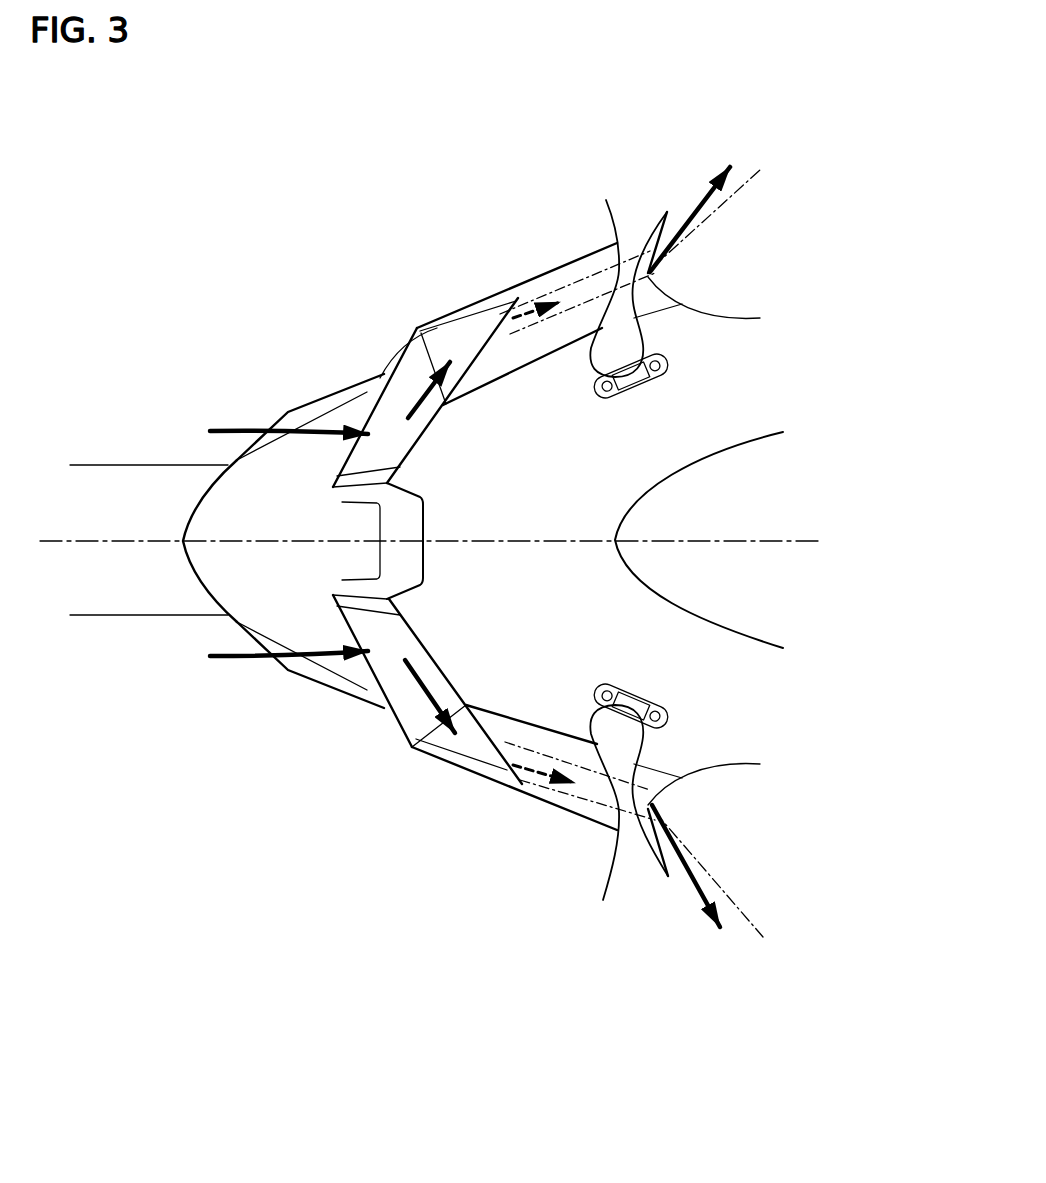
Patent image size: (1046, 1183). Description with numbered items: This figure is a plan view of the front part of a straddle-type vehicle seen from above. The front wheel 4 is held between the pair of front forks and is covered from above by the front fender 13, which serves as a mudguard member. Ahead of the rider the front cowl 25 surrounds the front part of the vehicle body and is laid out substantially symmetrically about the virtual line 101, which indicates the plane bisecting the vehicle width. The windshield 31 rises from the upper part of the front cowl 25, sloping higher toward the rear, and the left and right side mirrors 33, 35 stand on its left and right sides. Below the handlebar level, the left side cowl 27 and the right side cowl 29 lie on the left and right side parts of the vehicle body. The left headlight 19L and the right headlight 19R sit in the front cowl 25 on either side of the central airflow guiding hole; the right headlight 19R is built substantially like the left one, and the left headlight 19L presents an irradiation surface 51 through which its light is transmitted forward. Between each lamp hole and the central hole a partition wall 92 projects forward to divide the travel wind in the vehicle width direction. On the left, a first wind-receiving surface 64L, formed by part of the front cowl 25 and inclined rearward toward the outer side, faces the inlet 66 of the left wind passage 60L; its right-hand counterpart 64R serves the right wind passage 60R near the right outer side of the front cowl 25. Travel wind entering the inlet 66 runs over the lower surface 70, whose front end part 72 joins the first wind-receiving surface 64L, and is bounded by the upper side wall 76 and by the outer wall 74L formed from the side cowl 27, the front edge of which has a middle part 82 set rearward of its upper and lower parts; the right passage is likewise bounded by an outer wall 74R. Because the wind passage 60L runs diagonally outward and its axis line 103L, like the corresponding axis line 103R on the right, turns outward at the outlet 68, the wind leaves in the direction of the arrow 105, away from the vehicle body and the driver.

The front wheel 4 is at (93, 608).
The front fender 13 is at (217, 493).
The right headlight 19R is at (467, 343).
The left headlight 19L is at (473, 731).
The front cowl 25 is at (717, 327).
The side cowl 27 is at (600, 843).
The side cowl 29 is at (606, 203).
The windshield 31 is at (752, 467).
The left side mirror 33 is at (635, 843).
The right side mirror 35 is at (641, 250).
The irradiation surface 51 is at (412, 745).
The right wind passage 60R is at (481, 317).
The wind passage 60L is at (483, 758).
The right winglet 64R is at (375, 422).
The first wind-receiving surface 64L is at (380, 662).
The inlet 66 is at (412, 745).
The outlet 68 is at (660, 807).
The lower surface 70 is at (525, 340).
The front end part 72 is at (445, 693).
The right duct wall 74R is at (597, 277).
The outer wall 74L is at (584, 805).
The upper side wall 76 is at (542, 745).
The middle part 82 is at (509, 780).
The partition wall 92 is at (360, 578).
The virtual line 101 is at (783, 542).
The right outlet axis 103R is at (805, 188).
The axis line 103L is at (757, 923).
The arrow 105 is at (697, 873).